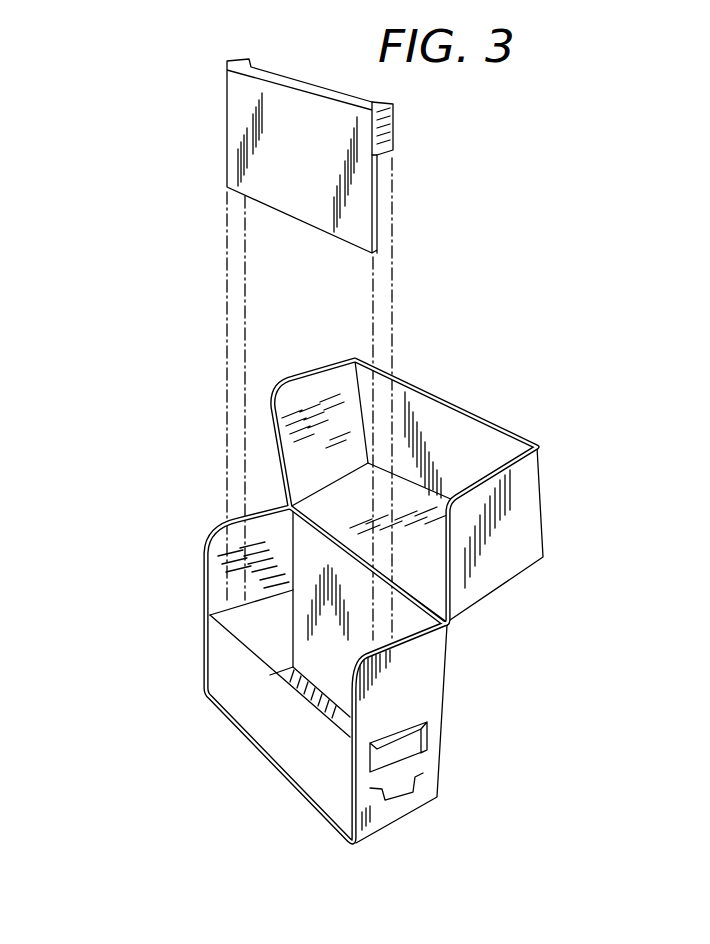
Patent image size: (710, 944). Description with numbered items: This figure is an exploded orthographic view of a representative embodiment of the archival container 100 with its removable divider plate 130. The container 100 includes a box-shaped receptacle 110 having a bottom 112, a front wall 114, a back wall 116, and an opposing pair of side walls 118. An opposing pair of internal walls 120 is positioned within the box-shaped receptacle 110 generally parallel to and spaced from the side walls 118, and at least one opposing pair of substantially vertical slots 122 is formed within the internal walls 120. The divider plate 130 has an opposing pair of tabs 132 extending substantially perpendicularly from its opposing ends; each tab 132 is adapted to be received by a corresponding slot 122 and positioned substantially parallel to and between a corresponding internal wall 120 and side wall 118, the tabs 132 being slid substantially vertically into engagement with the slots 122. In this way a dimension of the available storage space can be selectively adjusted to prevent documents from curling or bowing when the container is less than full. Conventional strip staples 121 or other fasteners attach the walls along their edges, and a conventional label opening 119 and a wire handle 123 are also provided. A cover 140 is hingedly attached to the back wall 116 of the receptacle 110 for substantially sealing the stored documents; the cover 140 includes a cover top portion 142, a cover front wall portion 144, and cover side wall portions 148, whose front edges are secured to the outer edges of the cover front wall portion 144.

The container 100 is at (143, 855).
The box-shaped receptacle 110 is at (354, 679).
The bottom 112 is at (297, 700).
The front wall 114 is at (328, 782).
The back wall 116 is at (405, 620).
The side walls 118 is at (205, 535).
The label opening 119 is at (417, 730).
The internal walls 120 is at (263, 633).
The strip staples 121 is at (357, 385).
The slots 122 is at (227, 608).
The wire handle 123 is at (417, 797).
The divider plate 130 is at (260, 130).
The tabs 132 is at (395, 127).
The cover 140 is at (412, 490).
The cover top portion 142 is at (330, 492).
The cover front wall portion 144 is at (453, 423).
The cover side wall portions 148 is at (523, 488).